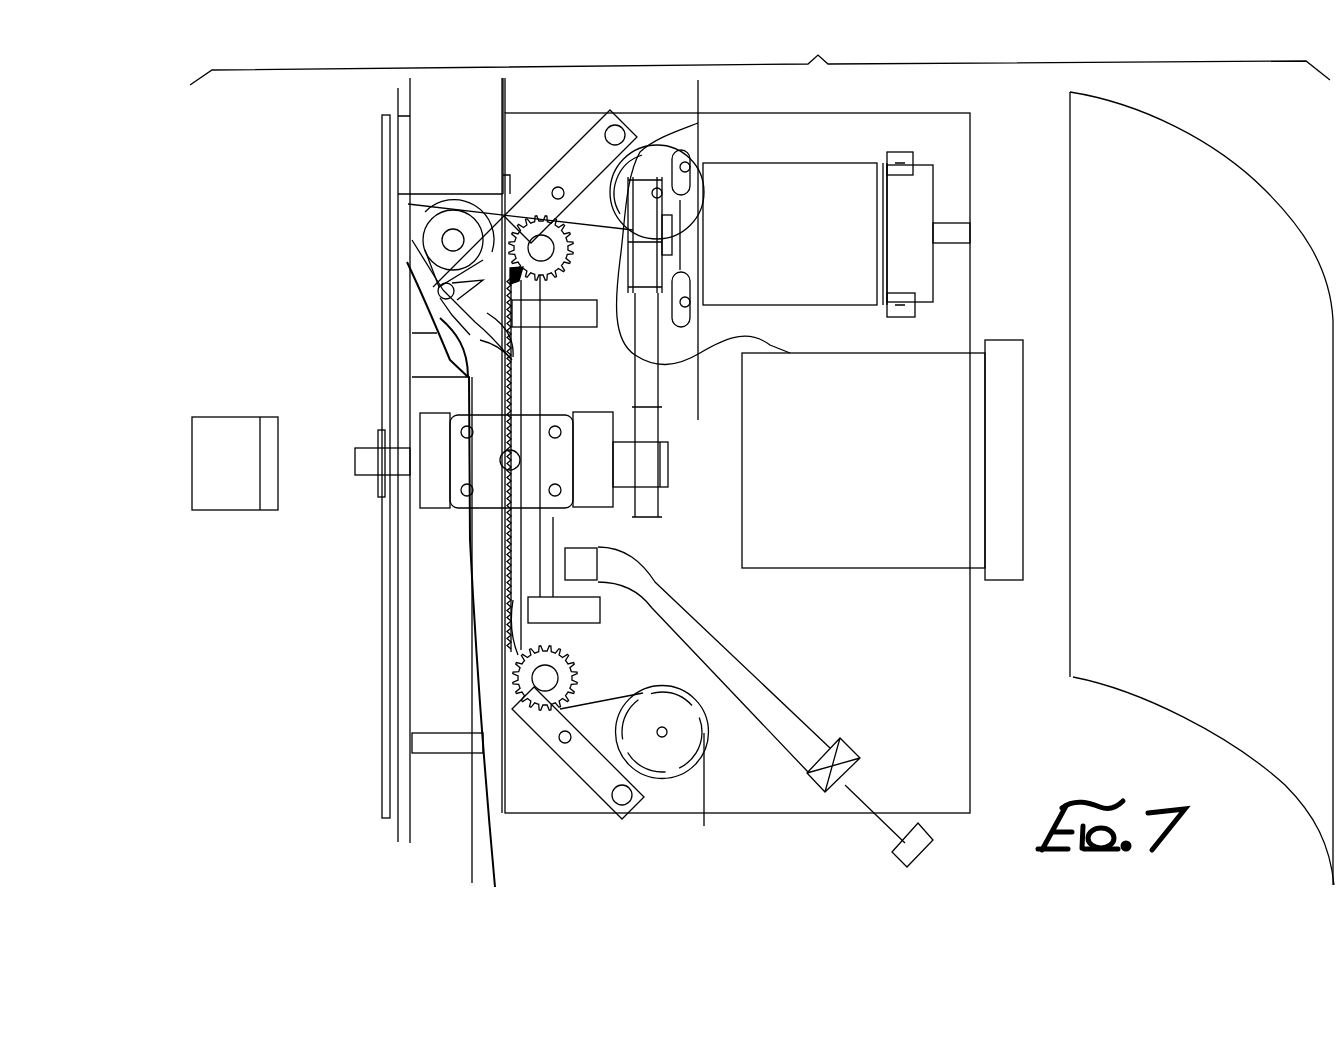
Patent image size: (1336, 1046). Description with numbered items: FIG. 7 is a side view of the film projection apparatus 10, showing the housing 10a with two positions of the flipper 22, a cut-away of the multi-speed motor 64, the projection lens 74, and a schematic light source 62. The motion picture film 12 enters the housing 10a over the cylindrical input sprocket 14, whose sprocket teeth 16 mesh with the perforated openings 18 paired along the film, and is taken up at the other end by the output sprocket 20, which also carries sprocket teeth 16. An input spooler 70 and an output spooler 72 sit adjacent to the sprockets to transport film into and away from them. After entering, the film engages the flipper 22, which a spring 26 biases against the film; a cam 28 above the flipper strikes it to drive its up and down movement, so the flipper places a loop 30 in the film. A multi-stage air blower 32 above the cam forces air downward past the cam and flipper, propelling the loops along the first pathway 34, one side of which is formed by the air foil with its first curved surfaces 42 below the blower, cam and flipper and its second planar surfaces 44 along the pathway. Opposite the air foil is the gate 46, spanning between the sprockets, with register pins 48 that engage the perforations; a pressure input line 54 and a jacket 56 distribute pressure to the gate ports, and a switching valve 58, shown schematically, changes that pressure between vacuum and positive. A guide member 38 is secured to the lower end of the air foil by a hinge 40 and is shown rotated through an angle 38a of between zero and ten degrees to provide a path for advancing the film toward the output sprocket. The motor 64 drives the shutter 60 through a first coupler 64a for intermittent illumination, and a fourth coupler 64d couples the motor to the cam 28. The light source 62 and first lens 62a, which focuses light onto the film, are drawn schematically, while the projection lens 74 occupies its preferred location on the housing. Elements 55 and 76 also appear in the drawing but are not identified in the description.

The apparatus 10 is at (823, 95).
The housing 10a is at (568, 112).
The motion picture film 12 is at (585, 227).
The input sprocket 14 is at (552, 258).
The sprocket teeth 16 is at (574, 245).
The perforated openings 18 is at (523, 217).
The output sprocket 20 is at (568, 675).
The flipper 22 is at (473, 345).
The spring 26 is at (438, 300).
The cam 28 is at (443, 230).
The loop 30 is at (490, 308).
The multi-stage air blower 32 is at (412, 100).
The first pathway 34 is at (503, 541).
The guide member 38 is at (463, 605).
The rotated angle 38a is at (450, 873).
The hinge 40 is at (458, 547).
The first curved surfaces 42 is at (420, 263).
The second planar surfaces 44 is at (472, 388).
The gate 46 is at (522, 385).
The register pins 48 is at (508, 585).
The pressure input line 54 is at (738, 648).
The sensor 55 is at (925, 853).
The jacket 56 is at (553, 528).
The switching valve 58 is at (843, 740).
The shutter 60 is at (385, 543).
The light source 62 is at (255, 525).
The first lens 62a is at (275, 430).
The multi-speed motor 64 is at (822, 165).
The first coupler 64a is at (647, 343).
The fourth coupler 64d is at (495, 192).
The input spooler 70 is at (685, 140).
The output spooler 72 is at (708, 743).
The projection lens 74 is at (935, 353).
The cover 76 is at (1210, 145).